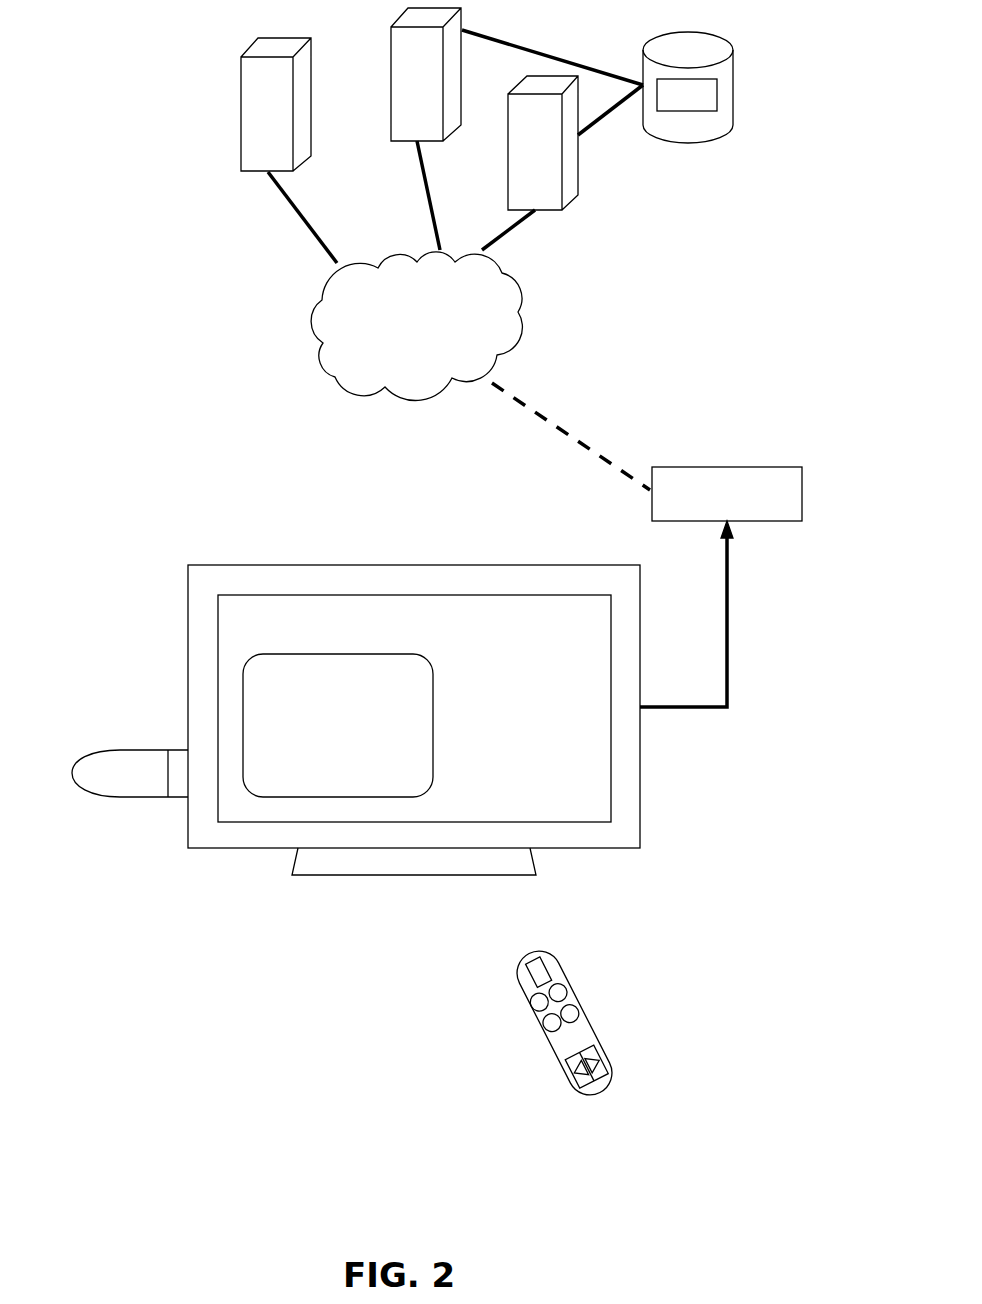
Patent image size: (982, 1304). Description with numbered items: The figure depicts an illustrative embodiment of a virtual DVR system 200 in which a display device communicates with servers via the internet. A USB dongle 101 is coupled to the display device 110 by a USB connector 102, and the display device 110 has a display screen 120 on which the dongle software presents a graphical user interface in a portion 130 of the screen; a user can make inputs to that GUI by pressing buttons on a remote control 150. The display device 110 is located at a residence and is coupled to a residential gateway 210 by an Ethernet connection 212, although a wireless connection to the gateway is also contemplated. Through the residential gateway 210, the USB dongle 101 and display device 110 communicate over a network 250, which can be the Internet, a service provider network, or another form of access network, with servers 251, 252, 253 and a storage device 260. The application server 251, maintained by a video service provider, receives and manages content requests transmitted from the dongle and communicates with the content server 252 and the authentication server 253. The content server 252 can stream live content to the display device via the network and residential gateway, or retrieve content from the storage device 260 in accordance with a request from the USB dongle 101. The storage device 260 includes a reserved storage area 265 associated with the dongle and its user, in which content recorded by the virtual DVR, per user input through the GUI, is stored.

The USB dongle 101 is at (98, 797).
The connector 102 is at (178, 797).
The display device 110 is at (237, 528).
The display screen 120 is at (318, 608).
The portion of the display screen 130 is at (438, 717).
The remote control 150 is at (540, 1039).
The virtual DVR system 200 is at (423, 1248).
The residential gateway 210 is at (782, 521).
The Ethernet connection 212 is at (727, 655).
The network 250 is at (520, 348).
The application server 251 is at (563, 208).
The content server 252 is at (391, 105).
The authentication server 253 is at (240, 143).
The storage device 260 is at (688, 142).
The reserved storage area 265 is at (720, 94).